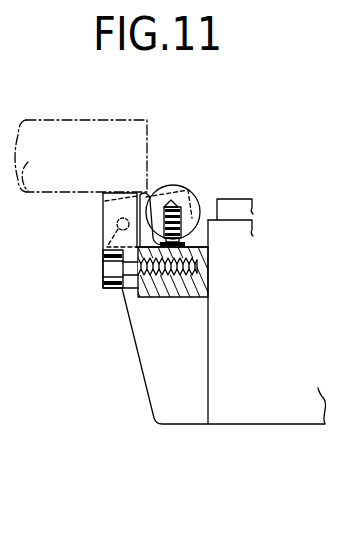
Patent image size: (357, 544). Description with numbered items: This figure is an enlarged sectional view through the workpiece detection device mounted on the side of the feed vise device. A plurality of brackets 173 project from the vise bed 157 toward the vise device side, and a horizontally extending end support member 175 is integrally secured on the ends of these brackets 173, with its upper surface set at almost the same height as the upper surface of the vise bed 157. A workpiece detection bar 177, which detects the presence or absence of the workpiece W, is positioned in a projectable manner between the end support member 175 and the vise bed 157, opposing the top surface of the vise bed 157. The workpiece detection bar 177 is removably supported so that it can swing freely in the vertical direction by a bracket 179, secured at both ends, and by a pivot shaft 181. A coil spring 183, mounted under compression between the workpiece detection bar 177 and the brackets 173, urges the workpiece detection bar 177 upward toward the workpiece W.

The workpiece W is at (68, 120).
The vise bed 157 is at (238, 407).
The brackets 173 is at (153, 292).
The end support member 175 is at (103, 194).
The workpiece detection bar 177 is at (170, 185).
The bracket 179 is at (141, 193).
The pivot shaft 181 is at (117, 229).
The coil spring 183 is at (183, 237).